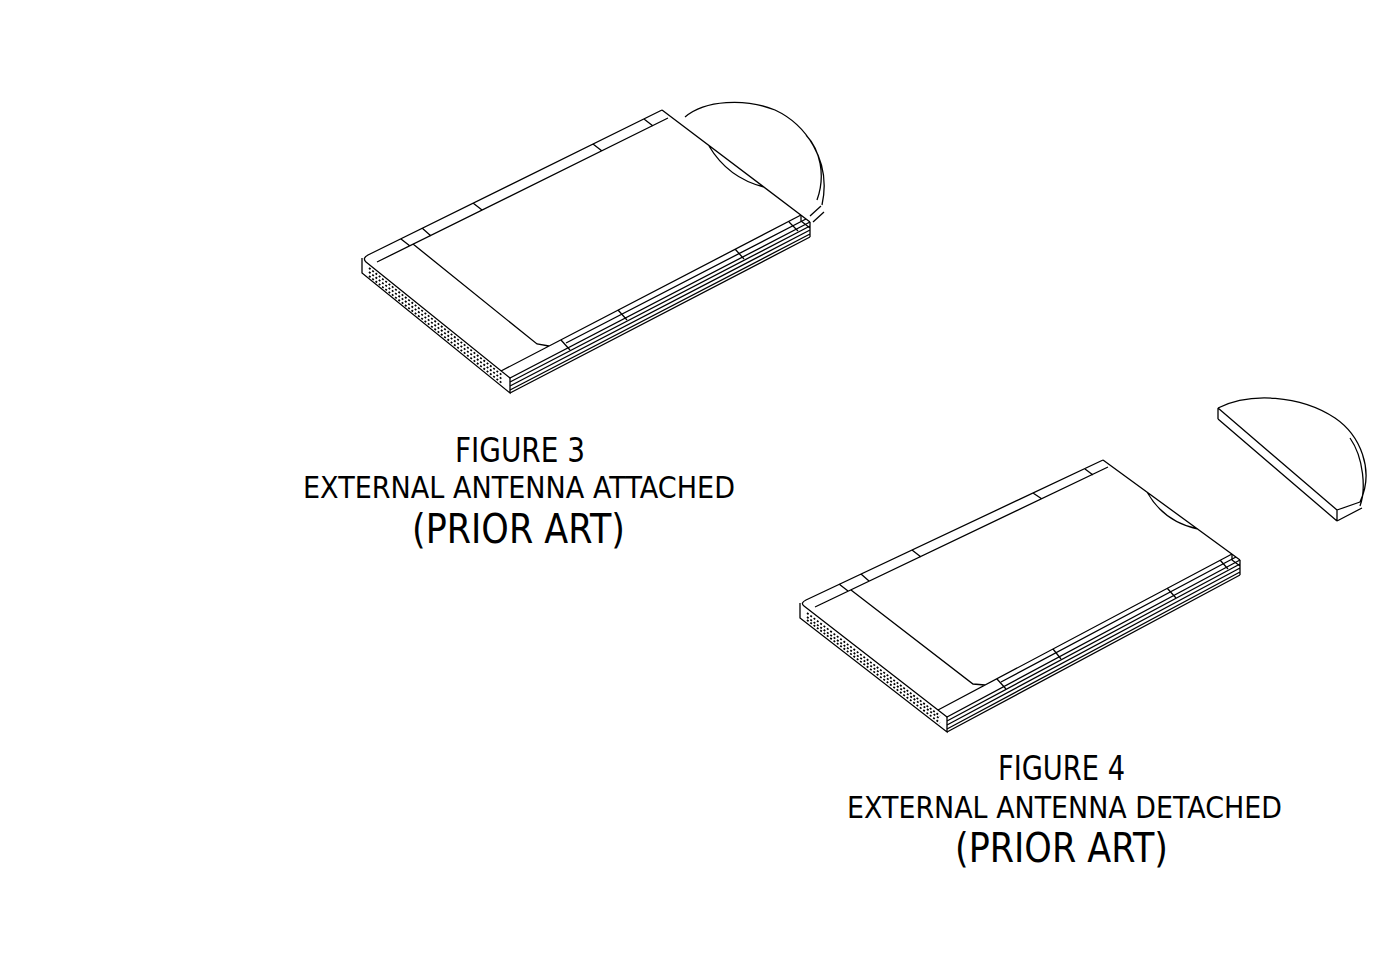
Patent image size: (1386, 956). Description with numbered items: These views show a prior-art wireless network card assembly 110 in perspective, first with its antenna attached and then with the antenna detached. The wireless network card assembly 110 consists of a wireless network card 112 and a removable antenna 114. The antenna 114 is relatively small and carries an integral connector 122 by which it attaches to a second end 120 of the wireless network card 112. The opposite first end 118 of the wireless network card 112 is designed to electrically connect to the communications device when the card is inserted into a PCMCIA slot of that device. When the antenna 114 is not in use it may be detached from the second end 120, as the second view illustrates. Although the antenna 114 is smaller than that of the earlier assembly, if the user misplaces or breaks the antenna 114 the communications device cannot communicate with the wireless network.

In FIG. 3, the wireless network card assembly 110 is at (500, 113).
In FIG. 4, the wireless network card assembly 110 is at (1028, 452).
In FIG. 3, the wireless network card 112 is at (687, 312).
In FIG. 4, the wireless network card 112 is at (1123, 640).
In FIG. 3, the removable antenna 114 is at (828, 163).
In FIG. 4, the removable antenna 114 is at (1317, 410).
In FIG. 3, the first end 118 is at (422, 327).
In FIG. 3, the second end 120 is at (672, 120).
In FIG. 3, the integral connector 122 is at (830, 207).